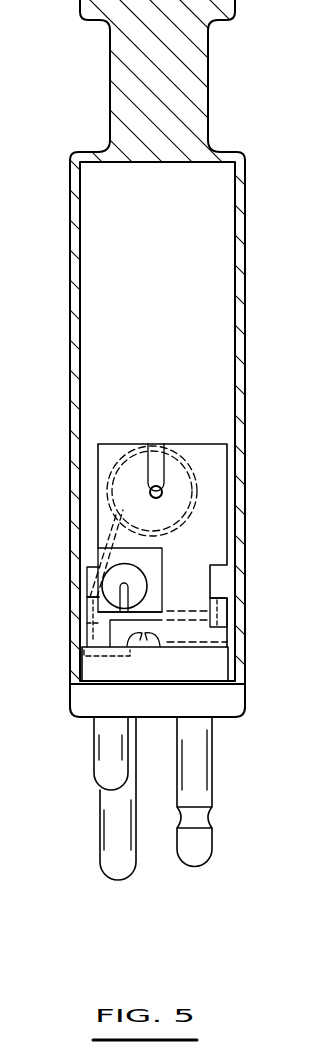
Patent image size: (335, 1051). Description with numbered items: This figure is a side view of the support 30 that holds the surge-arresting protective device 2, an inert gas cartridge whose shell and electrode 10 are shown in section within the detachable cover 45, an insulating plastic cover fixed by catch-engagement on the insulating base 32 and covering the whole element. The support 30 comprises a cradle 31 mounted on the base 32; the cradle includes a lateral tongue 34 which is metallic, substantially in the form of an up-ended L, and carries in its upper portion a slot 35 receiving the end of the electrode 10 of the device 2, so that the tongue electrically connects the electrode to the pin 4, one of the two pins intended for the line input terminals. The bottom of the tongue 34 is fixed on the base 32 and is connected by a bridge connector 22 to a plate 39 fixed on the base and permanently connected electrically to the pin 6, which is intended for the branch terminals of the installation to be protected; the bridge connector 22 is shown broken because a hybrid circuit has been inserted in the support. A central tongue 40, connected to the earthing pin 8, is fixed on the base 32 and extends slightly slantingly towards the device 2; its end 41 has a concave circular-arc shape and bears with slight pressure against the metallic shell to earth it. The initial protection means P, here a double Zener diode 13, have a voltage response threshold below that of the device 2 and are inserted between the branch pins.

The inert gas protective device 2 is at (197, 490).
The pin 4 is at (200, 778).
The pin 6 is at (108, 771).
The earthing pin 8 is at (108, 855).
The electrode 10 is at (161, 488).
The double Zener diode 13 is at (106, 582).
The bridge connector 22 is at (136, 645).
The support 30 is at (228, 630).
The cradle 31 is at (203, 441).
The insulating base 32 is at (220, 667).
The lateral tongue 34 is at (208, 543).
The slot 35 is at (157, 450).
The plate 39 is at (110, 639).
The central tongue 40 is at (100, 553).
The end of central tongue 41 is at (108, 478).
The detachable cover 45 is at (243, 249).
The initial protection means P is at (148, 583).